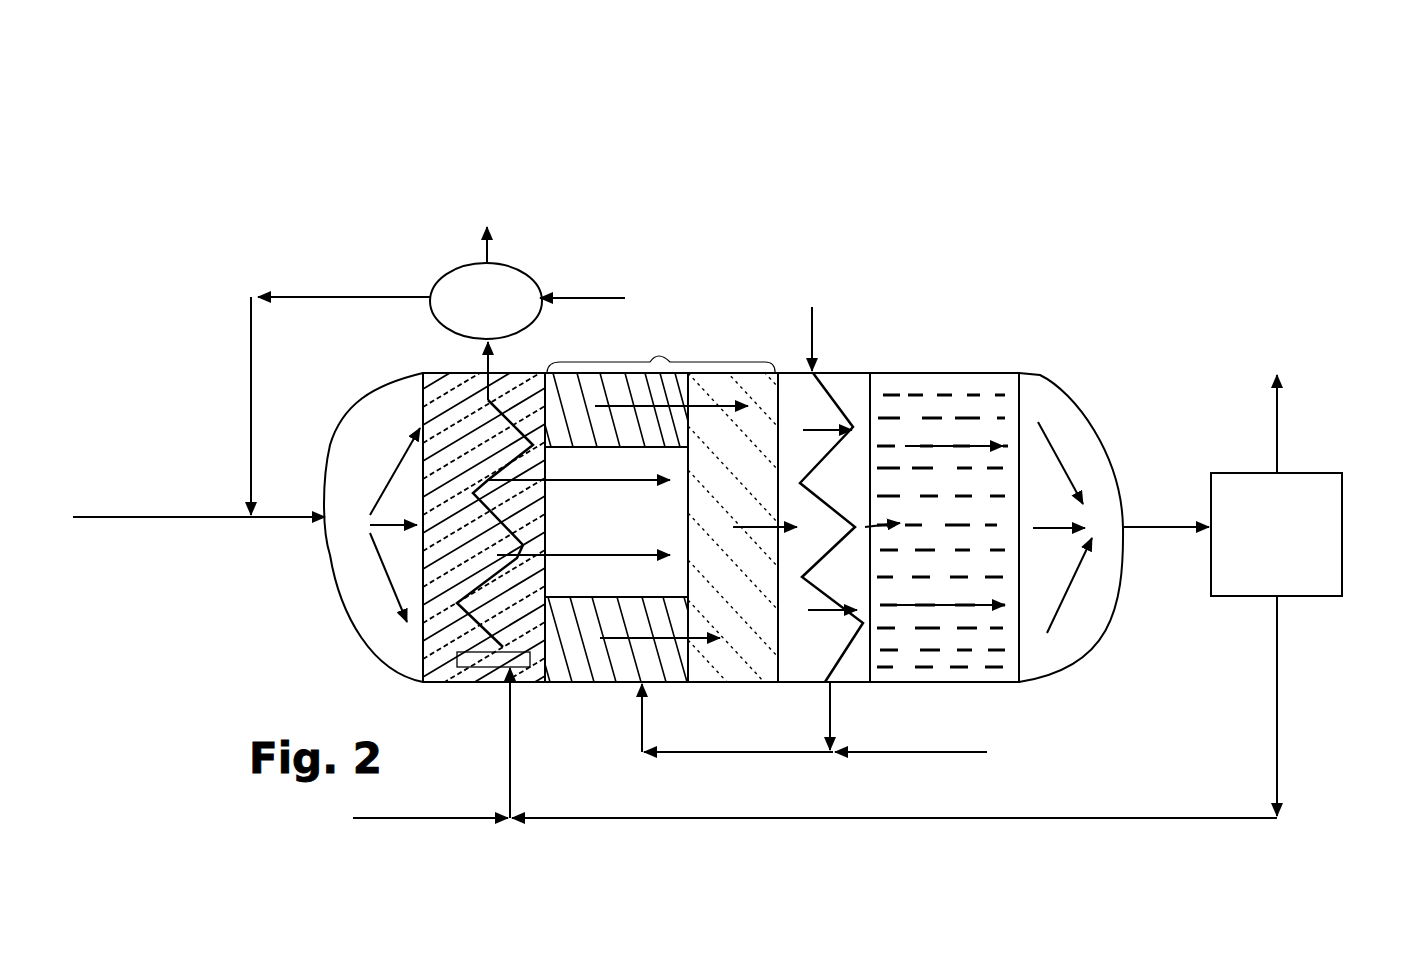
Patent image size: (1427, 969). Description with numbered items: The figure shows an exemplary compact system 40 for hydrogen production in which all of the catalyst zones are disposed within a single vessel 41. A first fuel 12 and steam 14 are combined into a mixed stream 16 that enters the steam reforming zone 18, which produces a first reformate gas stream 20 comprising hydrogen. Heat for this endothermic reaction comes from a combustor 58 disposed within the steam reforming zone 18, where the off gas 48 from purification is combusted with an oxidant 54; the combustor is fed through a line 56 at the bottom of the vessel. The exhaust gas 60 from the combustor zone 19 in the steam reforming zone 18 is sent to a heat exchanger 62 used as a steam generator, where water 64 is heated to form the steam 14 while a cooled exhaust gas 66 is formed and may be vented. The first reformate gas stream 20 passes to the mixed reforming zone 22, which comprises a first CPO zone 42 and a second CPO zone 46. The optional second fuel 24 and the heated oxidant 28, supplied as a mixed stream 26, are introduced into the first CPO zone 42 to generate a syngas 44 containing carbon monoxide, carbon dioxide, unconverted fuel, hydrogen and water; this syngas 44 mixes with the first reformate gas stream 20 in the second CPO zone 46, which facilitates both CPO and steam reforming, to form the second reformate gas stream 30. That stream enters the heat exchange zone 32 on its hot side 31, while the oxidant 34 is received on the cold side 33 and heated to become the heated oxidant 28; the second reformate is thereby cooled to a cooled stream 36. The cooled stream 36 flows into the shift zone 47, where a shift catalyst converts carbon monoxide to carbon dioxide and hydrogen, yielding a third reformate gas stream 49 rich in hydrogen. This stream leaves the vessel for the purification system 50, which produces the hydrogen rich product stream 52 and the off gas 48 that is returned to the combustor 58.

The compact system 40 is at (147, 138).
The first fuel 12 is at (143, 518).
The steam 14 is at (248, 367).
The mixed stream 16 is at (287, 520).
The single vessel 41 is at (350, 612).
The steam reforming zone 18 is at (417, 680).
The combustor zone 19 is at (480, 482).
The exhaust gas 60 is at (495, 352).
The combustor 58 is at (478, 667).
The recycle inlet line 56 is at (515, 752).
The oxidant 54 is at (408, 823).
The first reformate gas stream 20 is at (547, 680).
The syngas 44 is at (660, 643).
The mixed reforming zone 22 is at (661, 348).
The first CPO zone 42 is at (593, 667).
The mixed stream 26 is at (707, 758).
The second fuel 24 is at (887, 755).
The heated oxidant stream 28 is at (833, 703).
The second reformate gas stream 30 is at (760, 530).
The second CPO zone 46 is at (750, 390).
The hot side 31 is at (808, 627).
The heat exchange zone 32 is at (847, 372).
The oxidant 34 is at (812, 322).
The cooled stream 36 is at (883, 523).
The cold side 33 is at (850, 423).
The shift zone 47 is at (982, 387).
The third reformate gas stream 49 is at (1147, 528).
The purification system 50 is at (1318, 560).
The hydrogen rich product stream 52 is at (1282, 444).
The off gas 48 is at (1281, 690).
The heat exchanger 62 is at (516, 285).
The cooled exhaust gas 66 is at (490, 252).
The water 64 is at (625, 298).